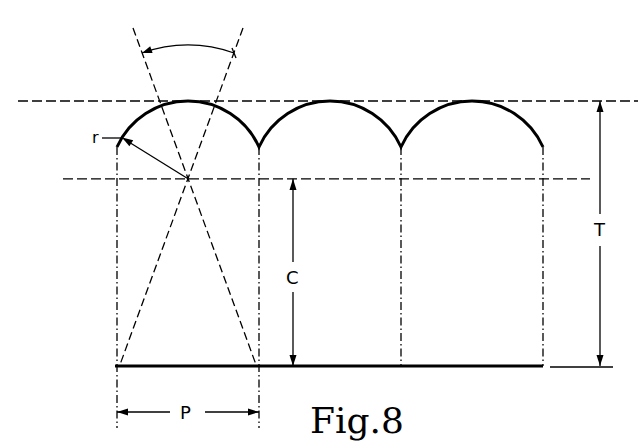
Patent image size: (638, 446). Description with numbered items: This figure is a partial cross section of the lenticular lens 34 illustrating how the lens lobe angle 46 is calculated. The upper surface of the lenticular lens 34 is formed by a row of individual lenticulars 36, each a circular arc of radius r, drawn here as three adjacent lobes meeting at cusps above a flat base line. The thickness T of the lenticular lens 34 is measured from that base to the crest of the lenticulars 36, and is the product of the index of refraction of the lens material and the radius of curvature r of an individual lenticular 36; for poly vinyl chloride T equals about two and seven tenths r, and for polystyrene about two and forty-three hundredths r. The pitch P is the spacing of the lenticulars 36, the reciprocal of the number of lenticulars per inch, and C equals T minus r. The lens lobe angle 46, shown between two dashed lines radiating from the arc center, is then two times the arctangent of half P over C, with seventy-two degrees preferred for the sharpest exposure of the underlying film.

The lenticular lens 34 is at (453, 348).
The individual lenticular 36 is at (371, 108).
The lens lobe angle 46 is at (212, 43).